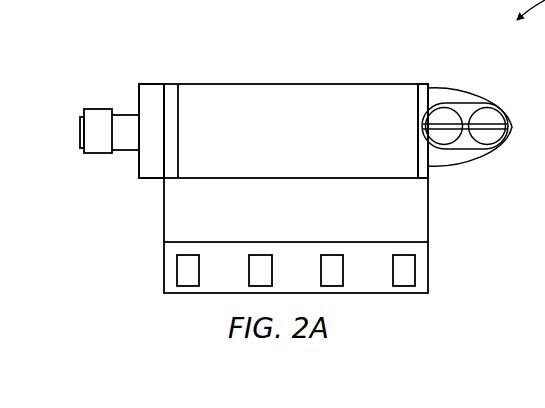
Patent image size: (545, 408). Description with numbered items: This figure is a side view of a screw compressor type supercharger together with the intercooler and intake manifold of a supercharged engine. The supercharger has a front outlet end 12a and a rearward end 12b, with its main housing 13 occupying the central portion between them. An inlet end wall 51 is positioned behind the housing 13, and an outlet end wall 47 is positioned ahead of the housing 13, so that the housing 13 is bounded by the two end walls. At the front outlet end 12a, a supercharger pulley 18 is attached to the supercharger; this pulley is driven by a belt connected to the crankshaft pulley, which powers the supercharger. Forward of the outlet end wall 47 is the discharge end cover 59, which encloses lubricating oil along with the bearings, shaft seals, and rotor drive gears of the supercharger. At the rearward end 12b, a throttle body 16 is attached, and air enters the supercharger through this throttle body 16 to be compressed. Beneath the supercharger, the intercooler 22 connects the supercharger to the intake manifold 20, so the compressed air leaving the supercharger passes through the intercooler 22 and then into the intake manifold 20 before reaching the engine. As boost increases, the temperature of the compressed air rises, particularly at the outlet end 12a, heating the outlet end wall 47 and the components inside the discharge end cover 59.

The front (outlet) end 12a is at (187, 72).
The rearward end 12b is at (398, 73).
The housing 13 is at (281, 126).
The throttle body 16 is at (478, 113).
The supercharger pulley 18 is at (97, 132).
The intake manifold 20 is at (168, 268).
The intercooler 22 is at (167, 218).
The outlet end wall 47 is at (171, 92).
The inlet end wall 51 is at (422, 93).
The discharge end cover 59 is at (155, 102).